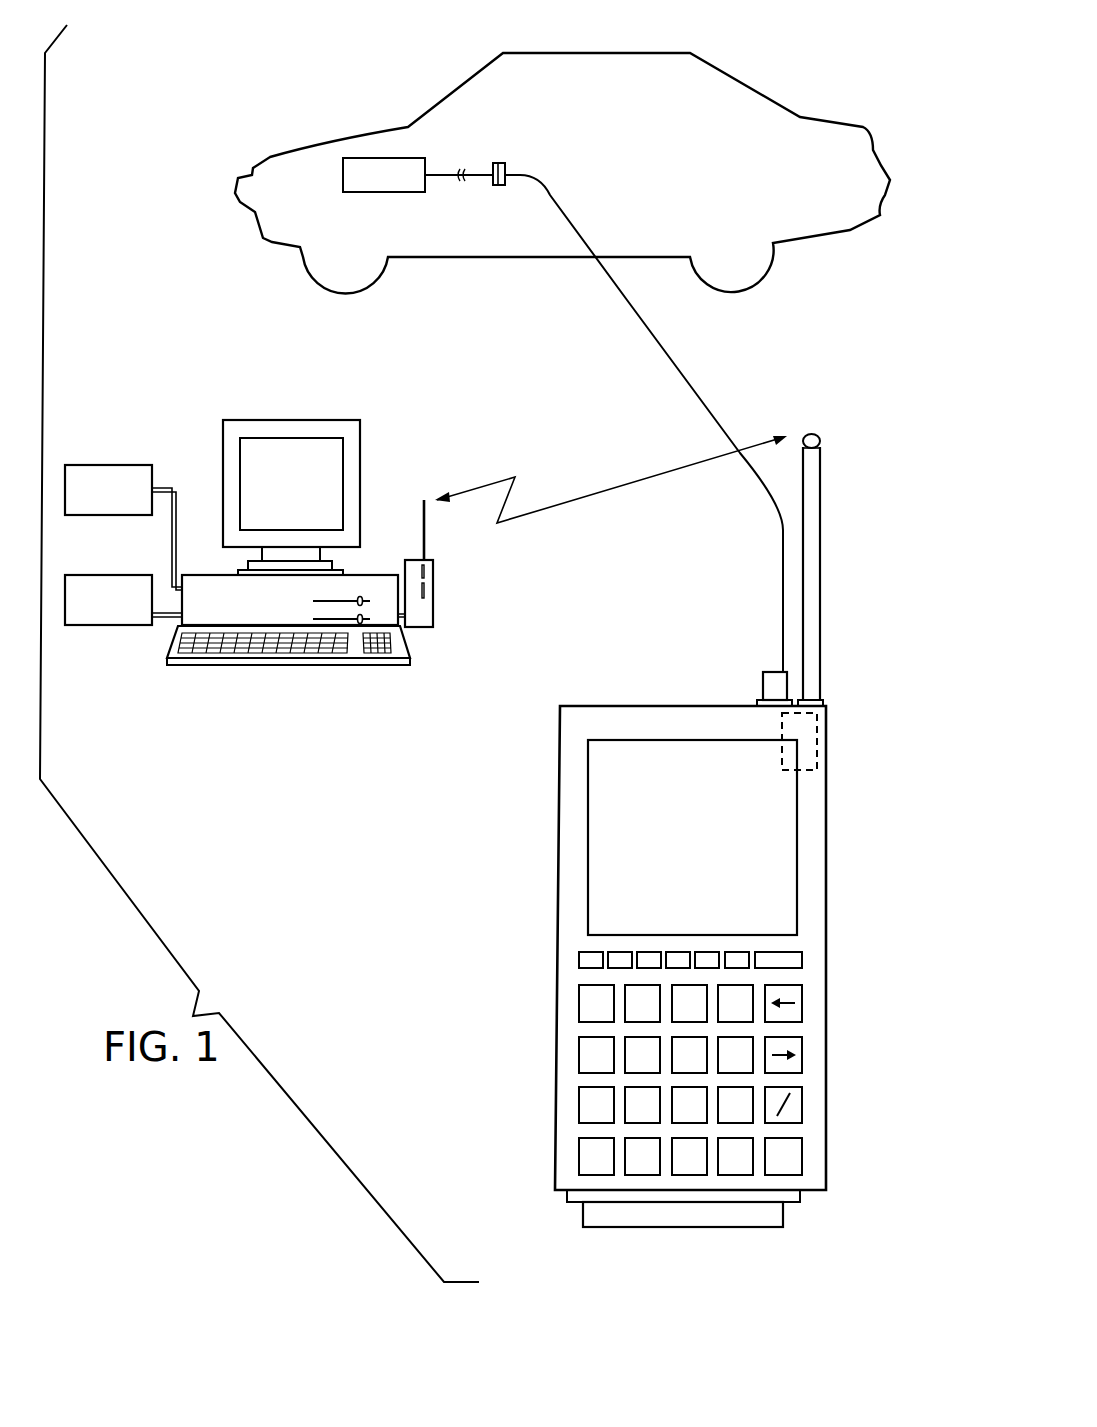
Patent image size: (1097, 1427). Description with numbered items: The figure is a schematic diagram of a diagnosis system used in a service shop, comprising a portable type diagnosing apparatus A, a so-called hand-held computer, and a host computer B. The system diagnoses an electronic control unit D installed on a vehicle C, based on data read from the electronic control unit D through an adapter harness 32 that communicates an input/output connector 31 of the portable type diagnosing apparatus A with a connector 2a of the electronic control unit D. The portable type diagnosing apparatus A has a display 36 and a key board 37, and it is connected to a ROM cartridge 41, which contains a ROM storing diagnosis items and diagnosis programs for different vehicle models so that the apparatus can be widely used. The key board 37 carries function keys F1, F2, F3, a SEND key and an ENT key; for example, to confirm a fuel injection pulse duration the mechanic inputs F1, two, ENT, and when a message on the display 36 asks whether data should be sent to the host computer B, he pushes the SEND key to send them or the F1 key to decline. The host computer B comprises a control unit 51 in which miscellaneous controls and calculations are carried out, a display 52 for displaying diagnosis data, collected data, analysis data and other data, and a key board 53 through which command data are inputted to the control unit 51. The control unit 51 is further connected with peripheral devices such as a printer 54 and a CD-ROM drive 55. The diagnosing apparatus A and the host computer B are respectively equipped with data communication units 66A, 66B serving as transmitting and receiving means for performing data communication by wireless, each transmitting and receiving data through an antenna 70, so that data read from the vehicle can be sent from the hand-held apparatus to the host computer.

The vehicle C is at (707, 45).
The electronic control unit D is at (388, 192).
The connector 2a is at (499, 163).
The adapter harness 32 is at (683, 373).
The host computer B is at (377, 428).
The display 52 is at (360, 450).
The control unit 51 is at (383, 575).
The key board 53 is at (303, 667).
The CD-ROM drive 55 is at (107, 465).
The printer 54 is at (107, 625).
The data communication unit 66B is at (433, 597).
The antenna 70 is at (426, 525).
The portable type diagnosing apparatus A is at (840, 771).
The display 36 is at (797, 890).
The input/output connector 31 is at (763, 690).
The data communication unit 66A is at (817, 730).
The F1 key F1 is at (617, 952).
The F2 key F2 is at (646, 952).
The F3 key F3 is at (678, 952).
The SEND key SEND is at (790, 952).
The key board 37 is at (842, 952).
The ENT key ENT is at (800, 1163).
The ROM cartridge 41 is at (583, 1213).